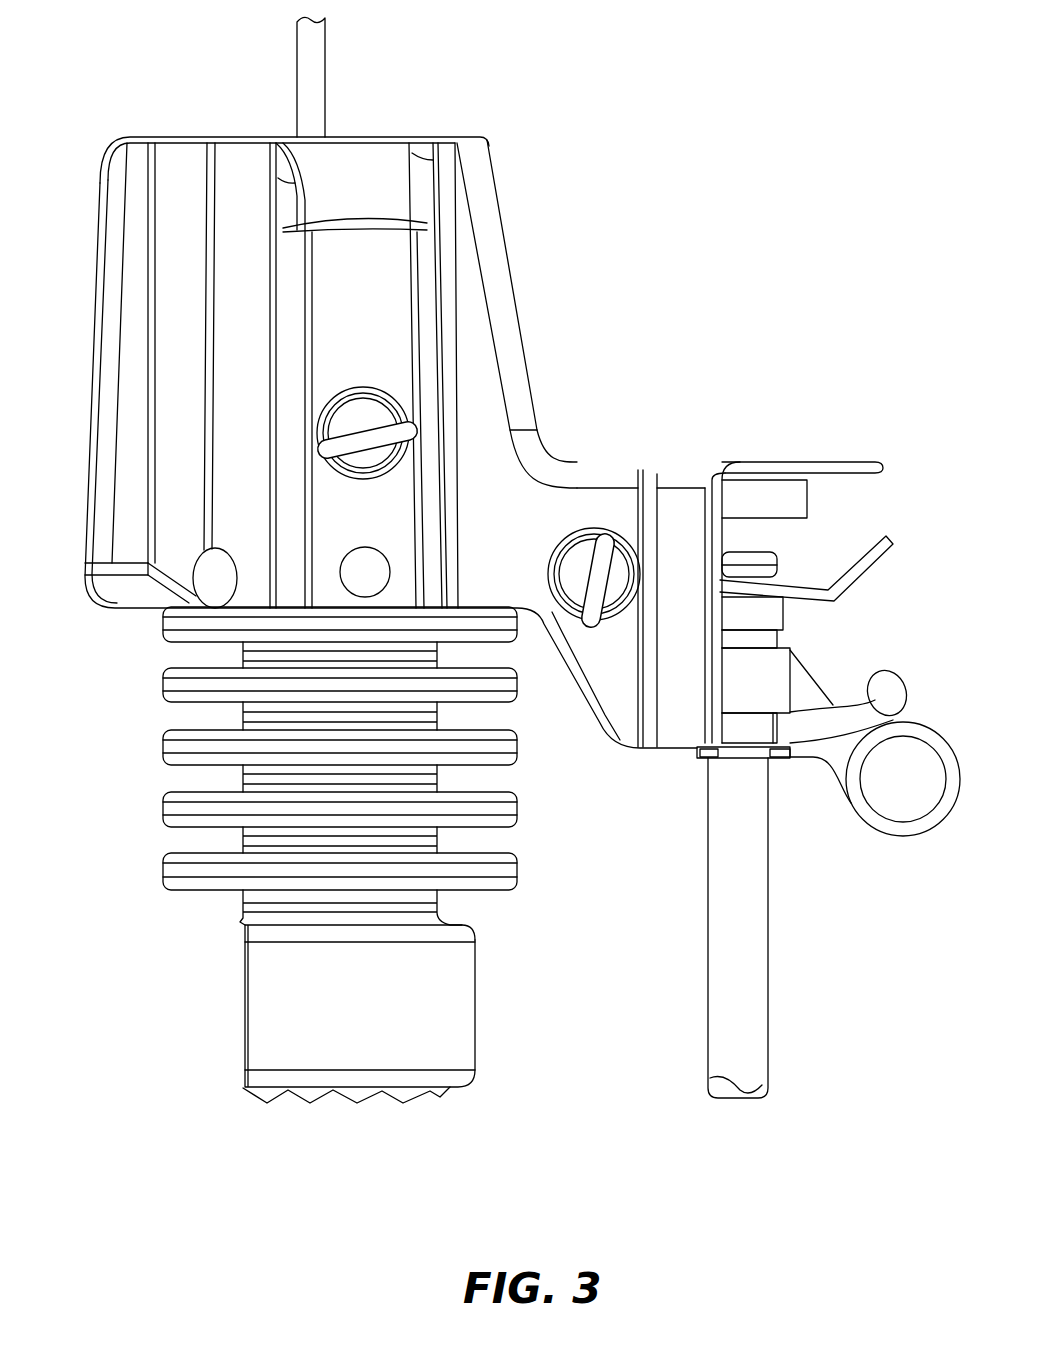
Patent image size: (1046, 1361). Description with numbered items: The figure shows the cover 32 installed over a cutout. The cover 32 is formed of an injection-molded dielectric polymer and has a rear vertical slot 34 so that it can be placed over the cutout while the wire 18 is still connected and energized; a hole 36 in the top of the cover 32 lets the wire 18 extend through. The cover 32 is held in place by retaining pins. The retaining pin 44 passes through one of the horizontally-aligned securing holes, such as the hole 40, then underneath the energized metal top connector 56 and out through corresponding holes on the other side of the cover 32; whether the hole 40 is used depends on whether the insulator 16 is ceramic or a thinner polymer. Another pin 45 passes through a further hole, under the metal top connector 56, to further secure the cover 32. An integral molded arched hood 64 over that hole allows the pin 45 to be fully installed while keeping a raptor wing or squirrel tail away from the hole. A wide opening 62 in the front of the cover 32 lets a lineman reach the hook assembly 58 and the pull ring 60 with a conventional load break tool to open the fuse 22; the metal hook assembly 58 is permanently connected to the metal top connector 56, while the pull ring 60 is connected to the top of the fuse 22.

The insulator 16 is at (163, 688).
The wire 18 is at (325, 92).
The fuse 22 is at (768, 925).
The cover 32 is at (612, 262).
The rear vertical slot 34 is at (103, 165).
The hole 36 is at (278, 137).
The hole 40 is at (382, 560).
The retaining pin 44 is at (408, 432).
The pin 45 is at (593, 622).
The metal top connector 56 is at (802, 493).
The hook assembly 58 is at (897, 673).
The pull ring 60 is at (892, 842).
The wide opening 62 is at (382, 386).
The hood 64 is at (551, 548).